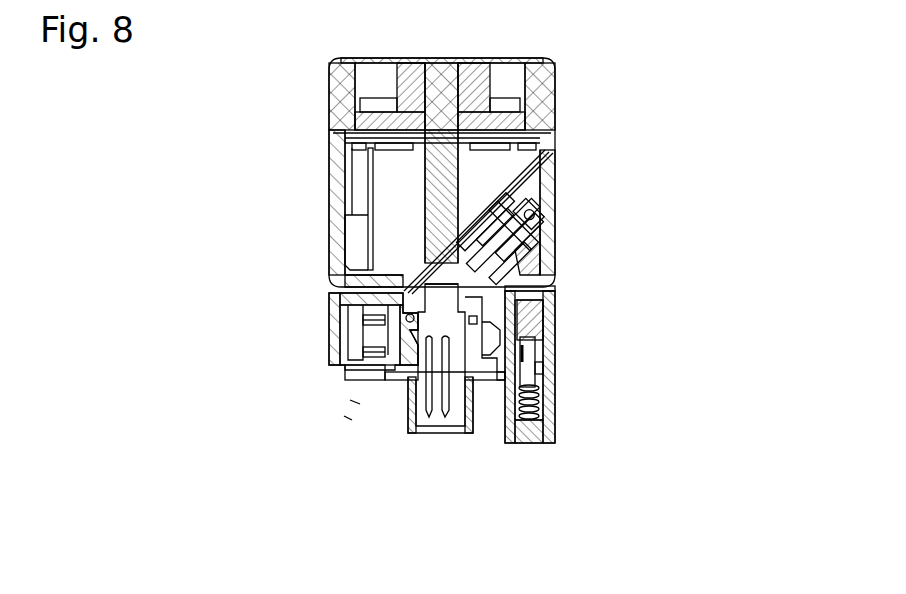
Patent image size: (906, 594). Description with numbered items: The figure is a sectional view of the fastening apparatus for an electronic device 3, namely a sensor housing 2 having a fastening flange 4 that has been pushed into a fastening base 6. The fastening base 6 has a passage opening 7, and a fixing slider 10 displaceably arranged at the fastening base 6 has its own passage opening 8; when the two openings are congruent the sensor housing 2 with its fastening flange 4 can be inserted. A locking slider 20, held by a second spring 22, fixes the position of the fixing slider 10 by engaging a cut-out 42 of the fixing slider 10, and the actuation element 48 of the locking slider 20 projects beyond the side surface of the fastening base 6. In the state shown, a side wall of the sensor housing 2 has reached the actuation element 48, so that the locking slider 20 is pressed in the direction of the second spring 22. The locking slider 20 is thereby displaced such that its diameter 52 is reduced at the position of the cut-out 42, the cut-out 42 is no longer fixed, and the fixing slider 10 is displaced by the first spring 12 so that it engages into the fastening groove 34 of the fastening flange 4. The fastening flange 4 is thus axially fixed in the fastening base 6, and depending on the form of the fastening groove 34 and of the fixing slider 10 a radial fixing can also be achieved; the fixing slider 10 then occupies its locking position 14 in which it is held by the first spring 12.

The sensor housing 2 is at (553, 216).
The electronic device 3 is at (576, 127).
The fastening flange 4 is at (397, 332).
The fastening base 6 is at (355, 403).
The passage opening 7 is at (399, 412).
The passage opening 8 is at (389, 407).
The fixing slider 10 is at (370, 383).
The first spring 12 is at (375, 345).
The locking position 14 is at (348, 419).
The locking slider 20 is at (549, 365).
The second spring 22 is at (548, 416).
The fastening groove 34 is at (503, 385).
The cut-out 42 is at (549, 370).
The actuation element 48 is at (548, 306).
The diameter 52 is at (542, 357).